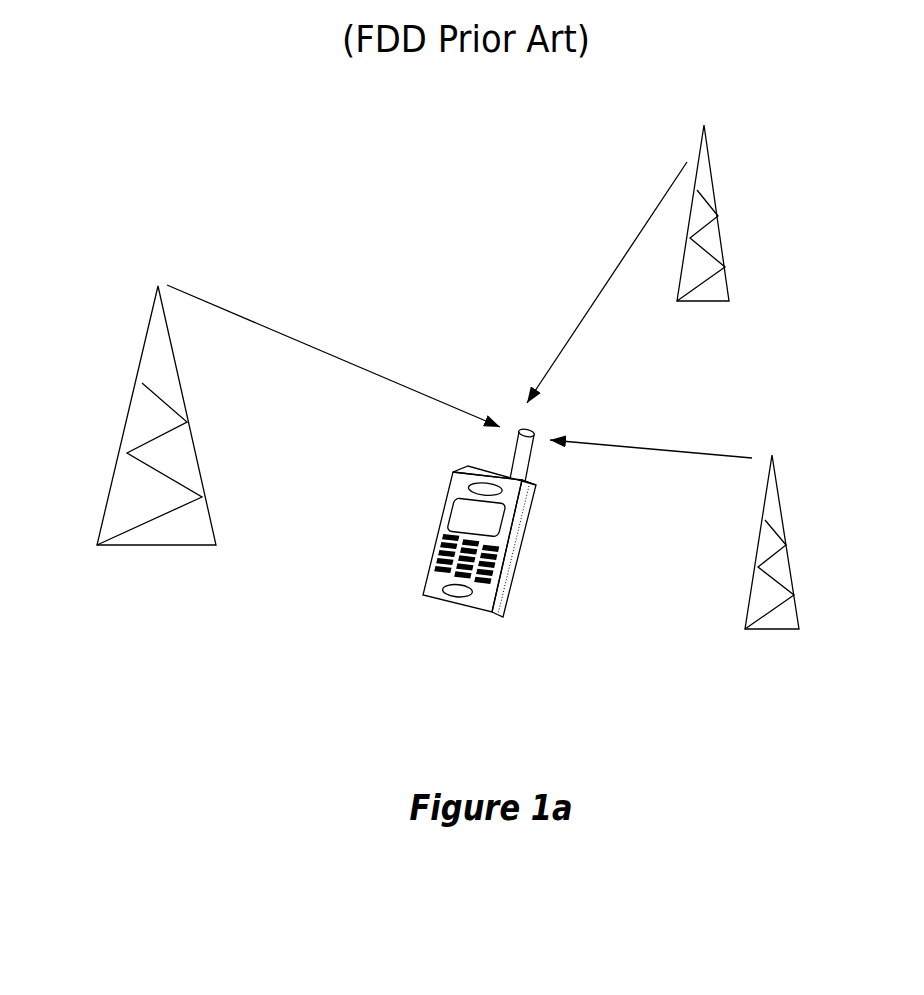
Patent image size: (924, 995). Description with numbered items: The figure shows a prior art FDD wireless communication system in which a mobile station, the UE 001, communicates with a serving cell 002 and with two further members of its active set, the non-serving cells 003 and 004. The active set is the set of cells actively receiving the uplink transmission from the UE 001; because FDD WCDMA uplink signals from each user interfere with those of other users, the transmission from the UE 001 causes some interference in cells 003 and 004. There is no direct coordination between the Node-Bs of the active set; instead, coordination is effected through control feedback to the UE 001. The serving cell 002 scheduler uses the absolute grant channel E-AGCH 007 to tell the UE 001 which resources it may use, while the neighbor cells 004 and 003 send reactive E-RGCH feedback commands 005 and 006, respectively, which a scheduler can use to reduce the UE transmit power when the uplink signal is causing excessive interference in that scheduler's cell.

The UE 001 is at (442, 646).
The serving cell 002 is at (135, 626).
The non-serving cell of the active set 003 is at (743, 744).
The non-serving cell of the active set 004 is at (805, 359).
The E-RGCH feedback command 005 is at (535, 269).
The E-RGCH feedback command 006 is at (647, 482).
The absolute grant channel (E-AGCH) 007 is at (340, 356).